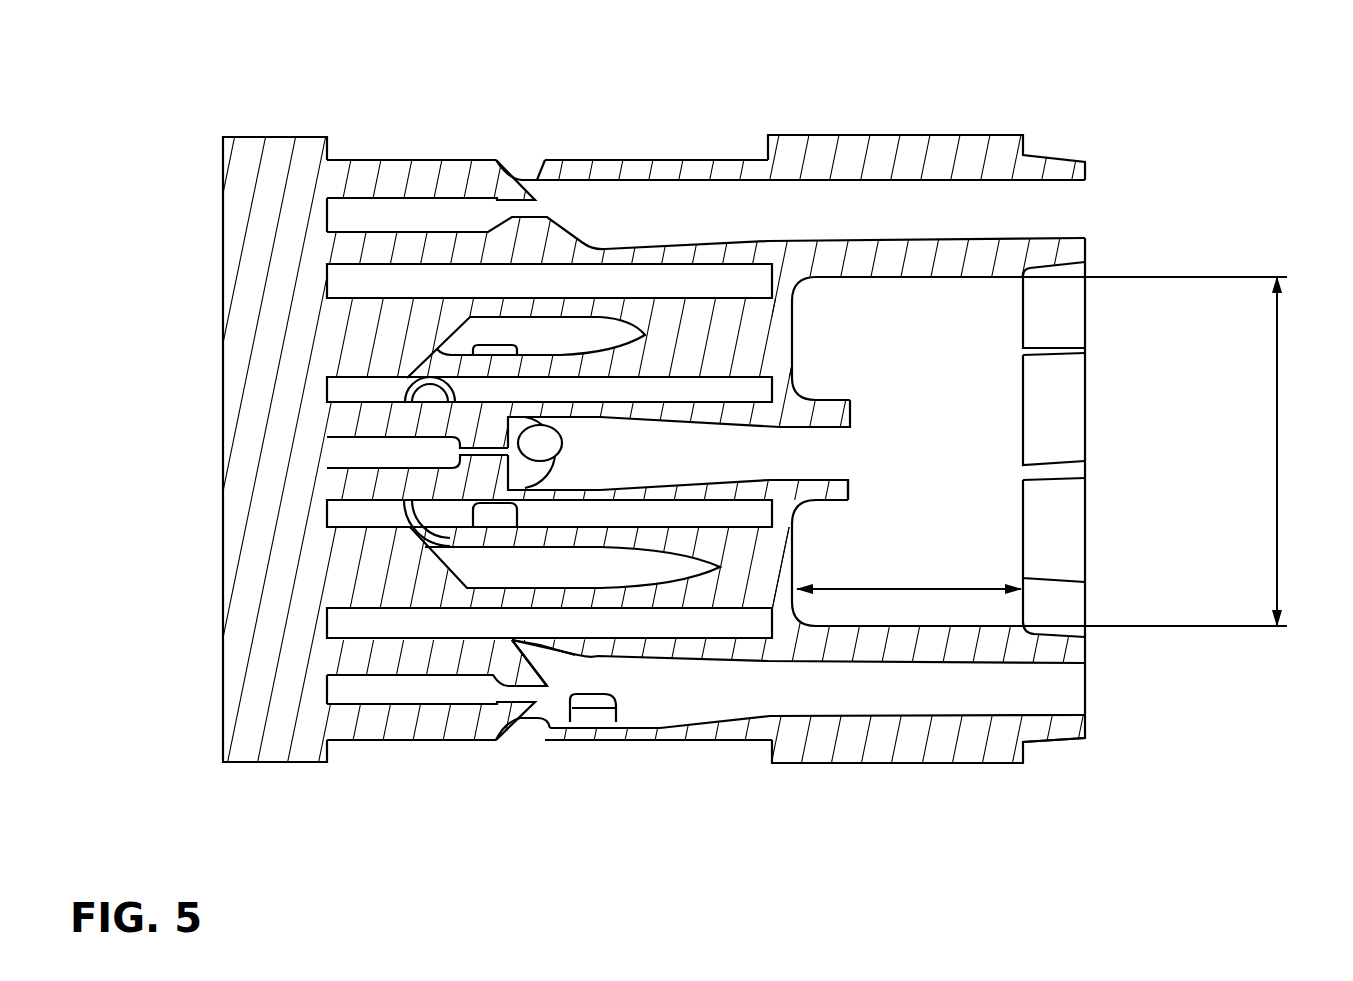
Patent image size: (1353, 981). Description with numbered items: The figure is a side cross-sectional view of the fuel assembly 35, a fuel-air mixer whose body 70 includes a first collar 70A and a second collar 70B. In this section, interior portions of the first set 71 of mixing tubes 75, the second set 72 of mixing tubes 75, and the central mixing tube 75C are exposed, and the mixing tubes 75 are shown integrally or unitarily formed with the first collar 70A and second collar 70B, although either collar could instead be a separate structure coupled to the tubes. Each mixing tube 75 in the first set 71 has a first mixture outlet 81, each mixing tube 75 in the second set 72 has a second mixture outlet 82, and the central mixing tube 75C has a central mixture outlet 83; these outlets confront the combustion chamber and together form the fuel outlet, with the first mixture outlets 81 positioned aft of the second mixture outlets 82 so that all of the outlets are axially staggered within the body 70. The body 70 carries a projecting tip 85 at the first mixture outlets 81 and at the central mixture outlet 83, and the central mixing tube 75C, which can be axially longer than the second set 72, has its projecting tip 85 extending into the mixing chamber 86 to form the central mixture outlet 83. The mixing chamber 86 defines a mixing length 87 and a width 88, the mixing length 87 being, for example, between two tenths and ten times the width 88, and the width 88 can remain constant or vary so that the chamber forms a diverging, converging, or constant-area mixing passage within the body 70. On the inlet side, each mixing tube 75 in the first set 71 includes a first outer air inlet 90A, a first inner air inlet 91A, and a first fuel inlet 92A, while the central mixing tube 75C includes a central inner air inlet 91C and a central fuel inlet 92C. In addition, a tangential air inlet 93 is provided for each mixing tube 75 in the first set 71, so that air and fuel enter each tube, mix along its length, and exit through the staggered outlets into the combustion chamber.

The fuel assembly 35 is at (228, 92).
The body 70 is at (222, 180).
The first collar 70A is at (966, 150).
The second collar 70B is at (290, 152).
The first set of mixing tubes 71 is at (737, 697).
The second set of mixing tubes 72 is at (588, 565).
The mixing tube 75 is at (718, 160).
The central mixing tube 75C is at (745, 440).
The first mixture outlet 81 is at (1088, 200).
The second mixture outlet 82 is at (795, 338).
The central mixture outlet 83 is at (852, 445).
The projecting tip 85 is at (828, 485).
The mixing chamber 86 is at (938, 328).
The mixing length 87 is at (915, 589).
The width 88 is at (1277, 563).
The first outer air inlet 90A is at (525, 180).
The first inner air inlet 91A is at (560, 653).
The central inner air inlet 91C is at (533, 438).
The first fuel inlet 92A is at (530, 697).
The central fuel inlet 92C is at (500, 448).
The tangential air inlet 93 is at (597, 702).